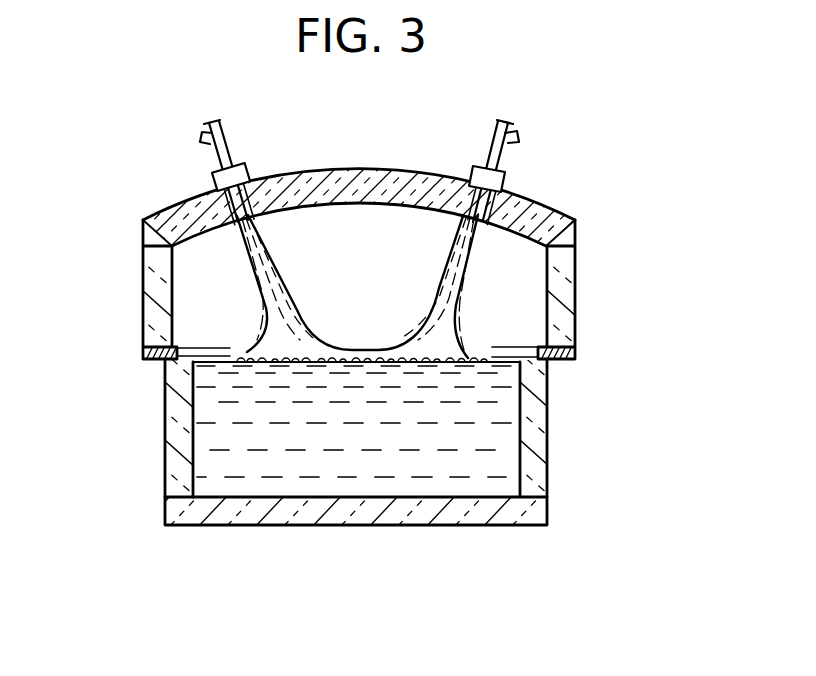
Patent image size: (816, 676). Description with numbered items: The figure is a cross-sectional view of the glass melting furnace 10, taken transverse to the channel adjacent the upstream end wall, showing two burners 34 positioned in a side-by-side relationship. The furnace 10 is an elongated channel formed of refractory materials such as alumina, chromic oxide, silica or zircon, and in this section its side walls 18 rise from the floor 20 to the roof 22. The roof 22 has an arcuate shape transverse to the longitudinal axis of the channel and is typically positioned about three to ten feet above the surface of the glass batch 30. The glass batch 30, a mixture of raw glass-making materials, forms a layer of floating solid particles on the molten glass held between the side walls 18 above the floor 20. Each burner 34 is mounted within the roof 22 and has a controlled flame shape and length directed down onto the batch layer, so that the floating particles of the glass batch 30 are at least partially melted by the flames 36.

The glass melting furnace 10 is at (612, 238).
The side walls 18 is at (143, 296).
The floor 20 is at (422, 525).
The roof 22 is at (363, 167).
The glass batch 30 is at (448, 360).
The burner 34 is at (212, 150).
The spray plume 36 is at (443, 281).